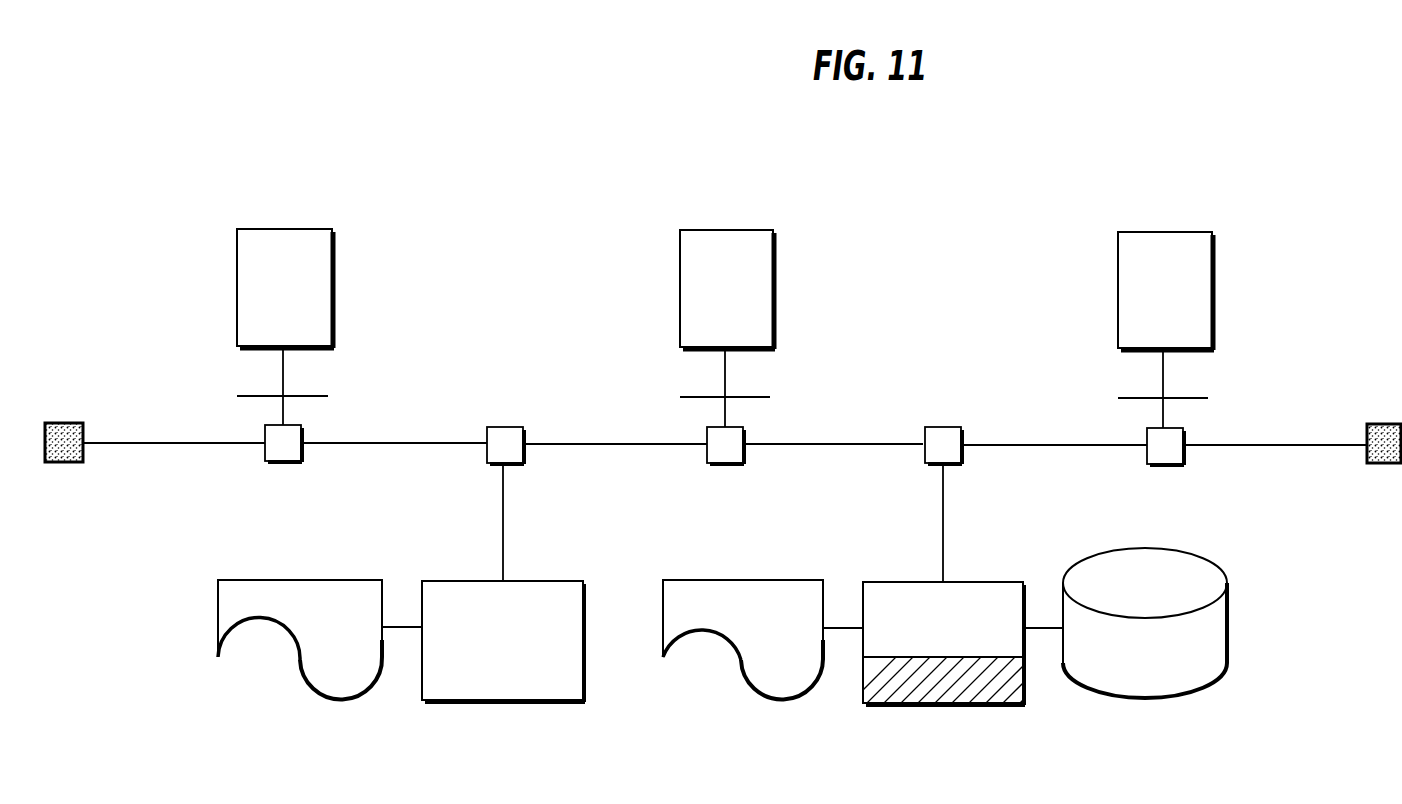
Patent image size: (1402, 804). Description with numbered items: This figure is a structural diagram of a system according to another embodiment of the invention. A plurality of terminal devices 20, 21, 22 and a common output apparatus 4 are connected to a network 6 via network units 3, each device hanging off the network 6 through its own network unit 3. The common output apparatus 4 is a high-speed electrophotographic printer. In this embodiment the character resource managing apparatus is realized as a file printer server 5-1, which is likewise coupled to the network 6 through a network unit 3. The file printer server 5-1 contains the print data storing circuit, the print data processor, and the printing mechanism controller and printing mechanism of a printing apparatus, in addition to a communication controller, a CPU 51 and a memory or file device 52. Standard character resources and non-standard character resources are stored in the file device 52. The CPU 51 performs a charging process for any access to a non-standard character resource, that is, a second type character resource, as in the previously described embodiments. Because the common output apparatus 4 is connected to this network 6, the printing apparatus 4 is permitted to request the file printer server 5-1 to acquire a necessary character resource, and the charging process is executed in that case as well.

The network unit 3 is at (289, 462).
The common output apparatus 4 is at (308, 704).
The network 6 is at (828, 460).
The terminal device 20 is at (334, 275).
The terminal device 21 is at (775, 276).
The terminal device 22 is at (1214, 280).
The CPU 51 is at (990, 582).
The file printer server 5-1 is at (896, 709).
The memory or file device 52 is at (1230, 622).